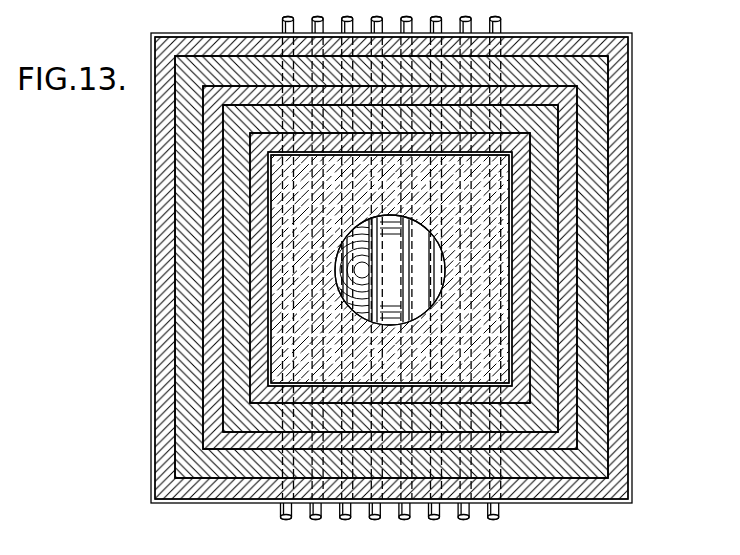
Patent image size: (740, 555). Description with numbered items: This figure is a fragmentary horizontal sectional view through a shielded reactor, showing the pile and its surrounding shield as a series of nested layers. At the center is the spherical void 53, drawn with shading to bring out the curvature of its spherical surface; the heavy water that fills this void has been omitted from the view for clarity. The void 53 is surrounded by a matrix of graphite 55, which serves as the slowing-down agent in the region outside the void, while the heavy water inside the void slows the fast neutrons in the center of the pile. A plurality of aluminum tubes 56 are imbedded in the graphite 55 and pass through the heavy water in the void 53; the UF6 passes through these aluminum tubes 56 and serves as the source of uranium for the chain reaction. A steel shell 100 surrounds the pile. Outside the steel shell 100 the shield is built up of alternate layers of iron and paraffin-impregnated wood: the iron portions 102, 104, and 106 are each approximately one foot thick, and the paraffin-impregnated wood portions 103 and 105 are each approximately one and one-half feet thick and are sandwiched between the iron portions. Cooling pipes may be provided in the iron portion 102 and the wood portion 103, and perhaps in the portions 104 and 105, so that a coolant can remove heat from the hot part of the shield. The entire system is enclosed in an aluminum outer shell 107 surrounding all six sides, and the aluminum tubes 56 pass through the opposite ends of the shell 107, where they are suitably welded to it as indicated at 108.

The steel shell 100 is at (272, 334).
The iron portion 102 is at (258, 311).
The paraffin-impregnated wood portion 103 is at (232, 288).
The iron portion 104 is at (212, 266).
The paraffin-impregnated wood portion 105 is at (190, 242).
The iron portion 106 is at (165, 216).
The outer shell 107 is at (151, 190).
The welds 108 is at (499, 33).
The void 53 is at (420, 266).
The graphite matrix 55 is at (478, 208).
The aluminum tubes 56 is at (283, 21).